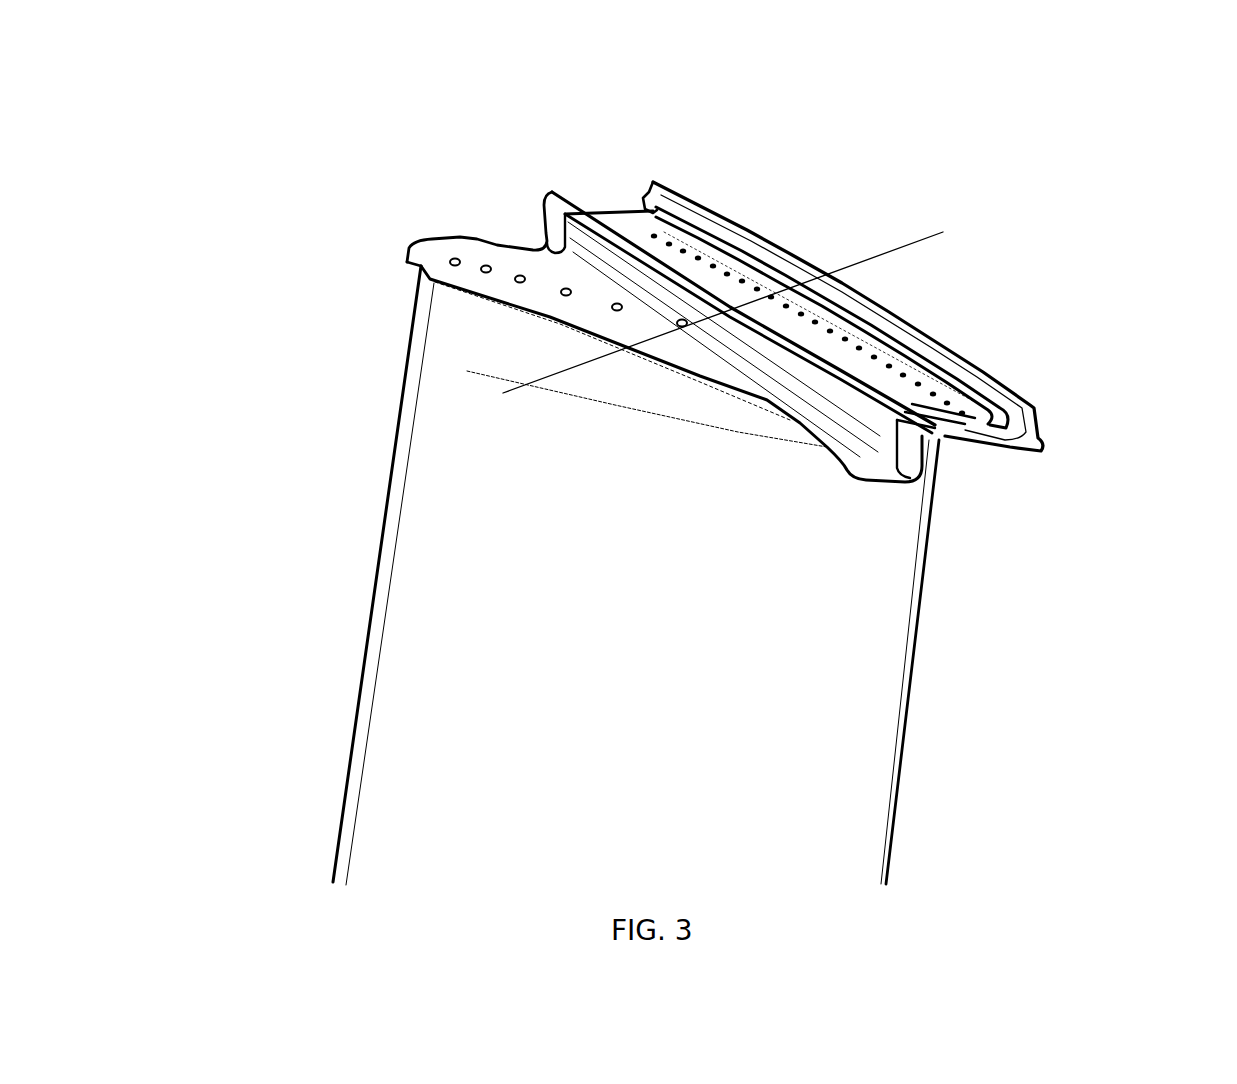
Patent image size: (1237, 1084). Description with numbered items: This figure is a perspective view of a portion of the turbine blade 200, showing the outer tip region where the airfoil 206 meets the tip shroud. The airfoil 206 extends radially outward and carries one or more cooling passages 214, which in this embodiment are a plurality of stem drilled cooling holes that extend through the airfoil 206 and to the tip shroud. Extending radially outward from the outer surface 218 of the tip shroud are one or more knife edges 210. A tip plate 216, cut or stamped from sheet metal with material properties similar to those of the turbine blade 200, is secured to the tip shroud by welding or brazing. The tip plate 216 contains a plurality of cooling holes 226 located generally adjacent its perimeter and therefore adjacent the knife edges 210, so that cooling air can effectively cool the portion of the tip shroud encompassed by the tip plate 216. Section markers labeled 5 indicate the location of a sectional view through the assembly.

The turbine blade 200 is at (1134, 463).
The airfoil 206 is at (655, 604).
The knife edges 210 is at (552, 192).
The cooling passages 214 is at (514, 280).
The tip plate 216 is at (623, 213).
The outer surface 218 is at (470, 243).
The cooling holes 226 is at (905, 382).
The section line 5- 5 is at (943, 232).